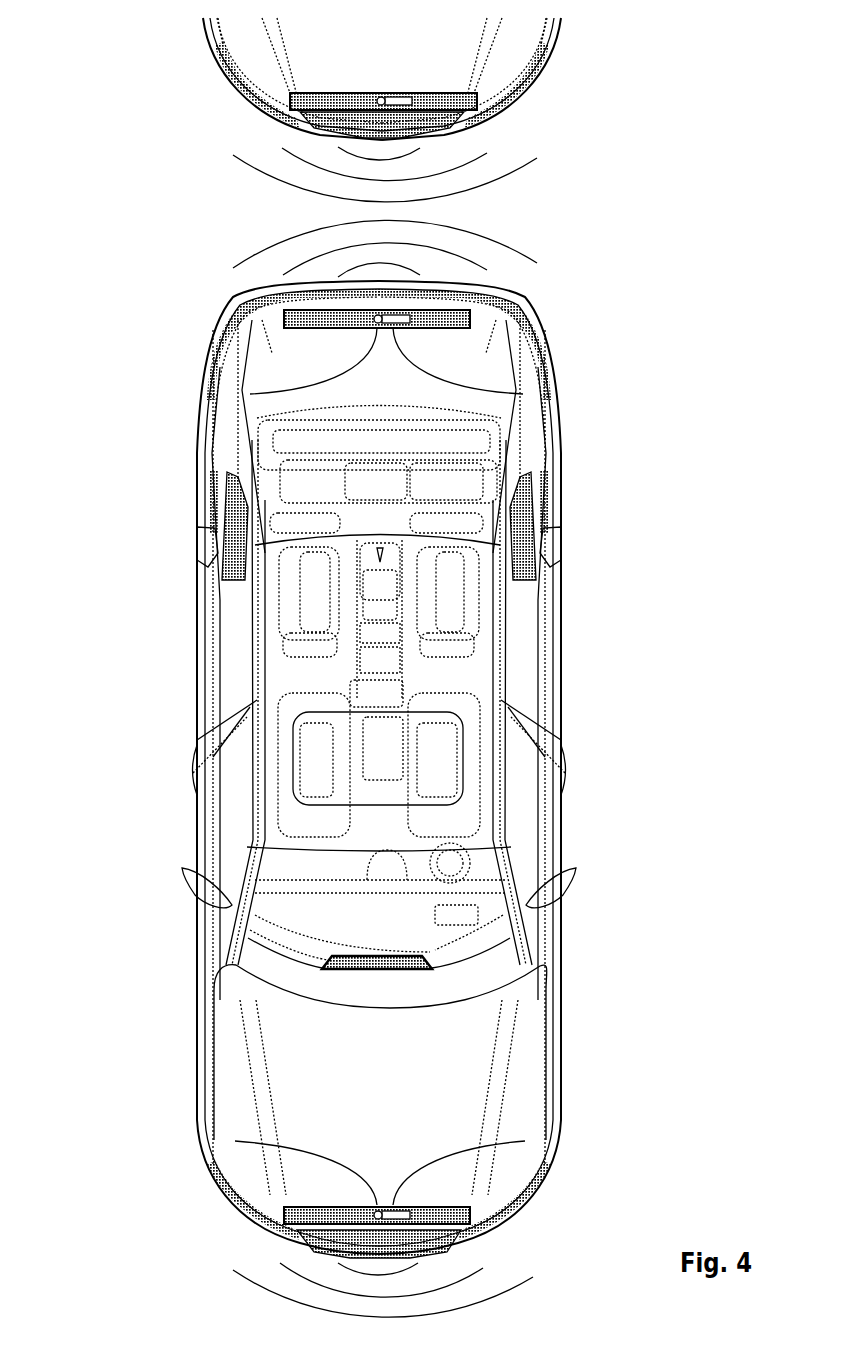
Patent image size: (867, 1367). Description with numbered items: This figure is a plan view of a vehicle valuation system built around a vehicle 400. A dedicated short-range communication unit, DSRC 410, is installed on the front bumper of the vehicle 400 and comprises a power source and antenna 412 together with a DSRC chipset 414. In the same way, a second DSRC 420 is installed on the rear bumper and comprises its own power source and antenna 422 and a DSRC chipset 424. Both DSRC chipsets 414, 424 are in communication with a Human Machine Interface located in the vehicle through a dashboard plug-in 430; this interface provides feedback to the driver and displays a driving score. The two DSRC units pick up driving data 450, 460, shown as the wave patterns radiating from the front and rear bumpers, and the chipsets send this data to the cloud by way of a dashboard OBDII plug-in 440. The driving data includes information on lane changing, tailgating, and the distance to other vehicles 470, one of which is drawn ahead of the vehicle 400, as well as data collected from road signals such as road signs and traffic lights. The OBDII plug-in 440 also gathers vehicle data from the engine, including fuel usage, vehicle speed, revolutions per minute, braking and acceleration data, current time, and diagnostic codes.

The vehicle 400 is at (379, 769).
The dedicated short-range communication (DSRC) 410 is at (470, 1217).
The power source and antenna 412 is at (379, 1140).
The DSRC chipset 414 is at (379, 1140).
The DSRC 420 is at (470, 320).
The power source and antenna 422 is at (379, 394).
The DSRC chipset 424 is at (379, 394).
The dashboard plug-in 430 is at (403, 968).
The dashboard OBDII plug-in 440 is at (478, 918).
The driving data received 450 is at (234, 1285).
The driving data received 460 is at (256, 214).
The other vehicles 470 is at (606, 26).